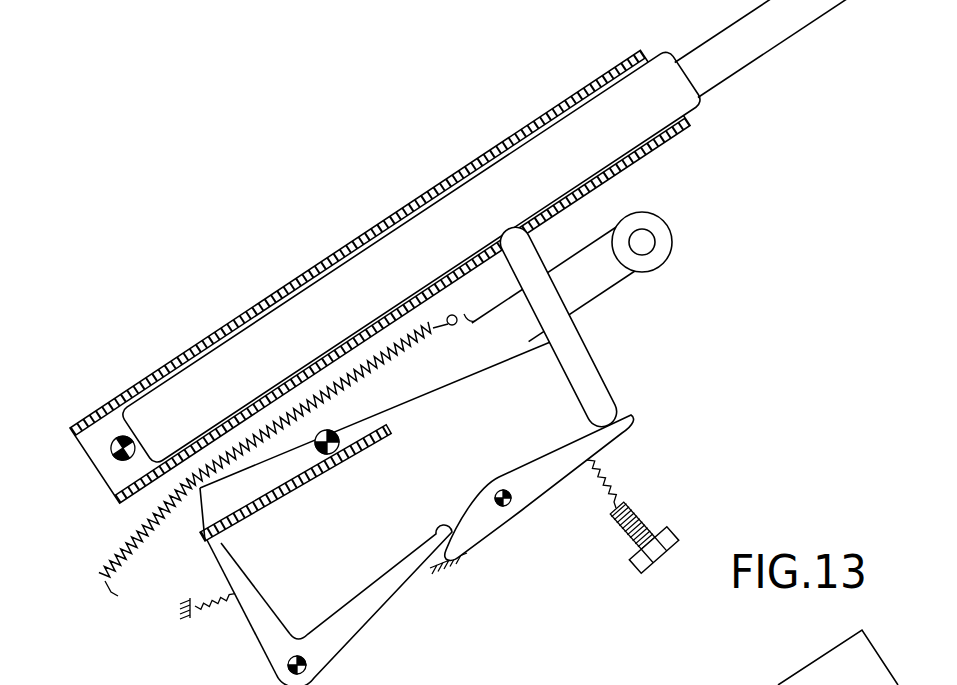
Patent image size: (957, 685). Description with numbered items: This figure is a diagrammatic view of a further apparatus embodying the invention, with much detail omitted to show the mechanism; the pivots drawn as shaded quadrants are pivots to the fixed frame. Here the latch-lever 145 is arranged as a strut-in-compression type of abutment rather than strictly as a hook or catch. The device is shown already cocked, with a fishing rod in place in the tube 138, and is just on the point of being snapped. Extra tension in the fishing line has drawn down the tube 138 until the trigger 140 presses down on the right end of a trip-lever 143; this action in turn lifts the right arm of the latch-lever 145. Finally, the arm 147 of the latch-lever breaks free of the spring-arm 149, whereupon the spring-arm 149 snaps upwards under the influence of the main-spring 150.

The tube 138 is at (432, 190).
The trigger 140 is at (604, 400).
The trip-lever 143 is at (535, 468).
The latch-lever 145 is at (352, 622).
The arm of the latch-lever 147 is at (228, 570).
The spring-arm 149 is at (598, 292).
The main-spring 150 is at (118, 558).